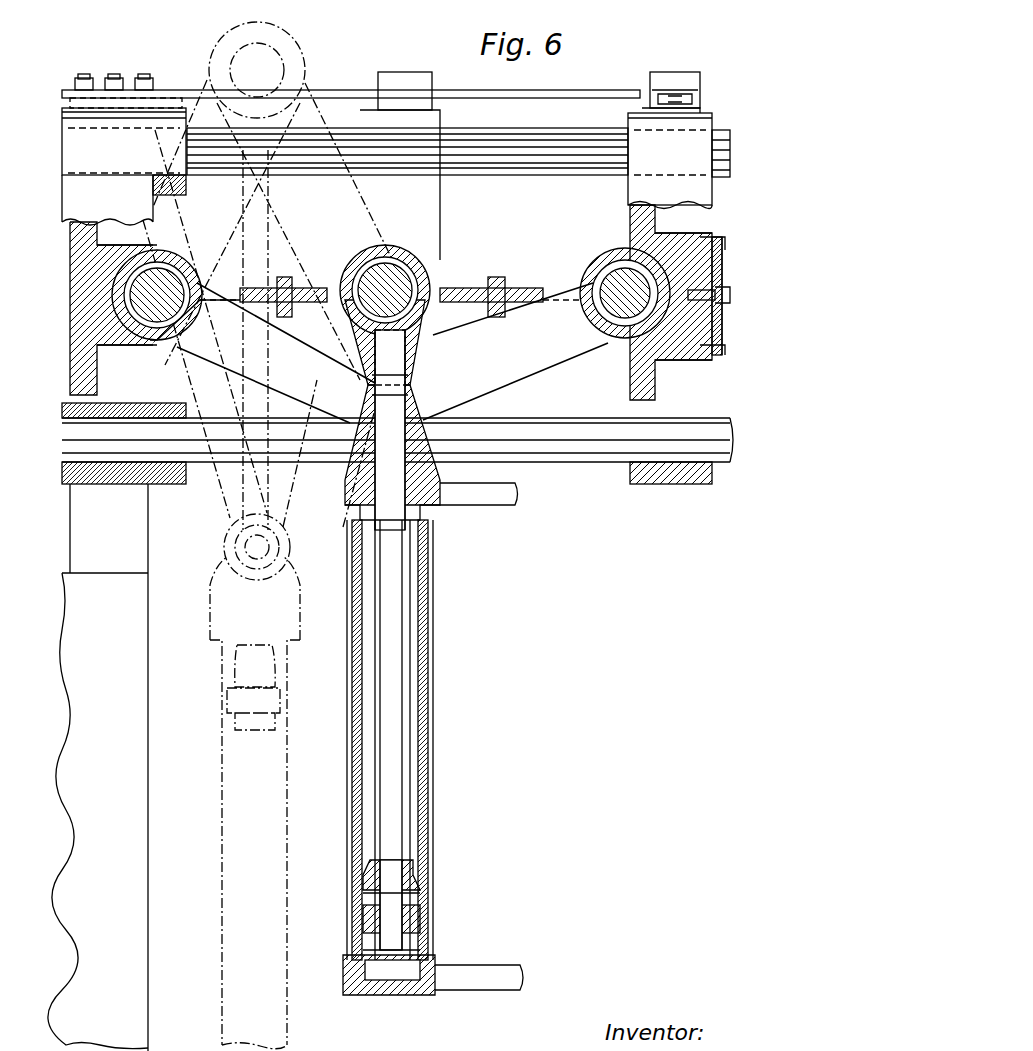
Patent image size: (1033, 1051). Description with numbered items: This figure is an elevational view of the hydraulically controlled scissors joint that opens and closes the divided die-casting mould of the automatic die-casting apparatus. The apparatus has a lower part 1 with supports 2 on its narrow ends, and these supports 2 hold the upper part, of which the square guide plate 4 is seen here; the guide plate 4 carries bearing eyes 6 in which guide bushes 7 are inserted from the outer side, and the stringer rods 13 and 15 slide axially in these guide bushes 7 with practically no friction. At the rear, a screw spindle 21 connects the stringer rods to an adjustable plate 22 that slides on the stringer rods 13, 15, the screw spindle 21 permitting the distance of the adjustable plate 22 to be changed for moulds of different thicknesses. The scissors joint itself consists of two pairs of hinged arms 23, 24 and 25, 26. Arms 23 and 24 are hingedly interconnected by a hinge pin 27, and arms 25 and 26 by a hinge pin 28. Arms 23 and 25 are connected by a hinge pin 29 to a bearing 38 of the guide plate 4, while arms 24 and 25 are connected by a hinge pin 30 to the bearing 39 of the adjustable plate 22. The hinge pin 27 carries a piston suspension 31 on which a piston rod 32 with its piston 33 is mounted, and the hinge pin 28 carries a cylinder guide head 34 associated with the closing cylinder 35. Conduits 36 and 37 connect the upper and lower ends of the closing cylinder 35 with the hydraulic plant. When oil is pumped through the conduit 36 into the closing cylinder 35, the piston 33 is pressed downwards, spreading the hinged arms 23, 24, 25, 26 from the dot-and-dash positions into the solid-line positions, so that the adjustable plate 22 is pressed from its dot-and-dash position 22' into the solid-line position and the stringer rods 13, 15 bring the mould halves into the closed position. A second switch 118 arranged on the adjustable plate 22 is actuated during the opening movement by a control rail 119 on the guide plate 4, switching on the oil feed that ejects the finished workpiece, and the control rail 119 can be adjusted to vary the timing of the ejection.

The lower part 1 is at (148, 750).
The support 2 is at (140, 537).
The square guide plate 4 is at (143, 218).
The bearing eye 6 is at (160, 115).
The guide bush 7 is at (150, 407).
The stringer rod 13 is at (566, 162).
The stringer rod 15 is at (600, 462).
The screw spindle 21 is at (718, 232).
The adjustable plate 22 is at (646, 162).
The adjustable plate position 22' is at (439, 161).
The hinged arm 23 is at (303, 252).
The hinged arm 24 is at (497, 267).
The hinged arm 25 is at (312, 395).
The hinged arm 26 is at (522, 372).
The hinge pin 27 is at (400, 262).
The hinge pin 28 is at (438, 492).
The hinge pin 29 is at (165, 272).
The hinge pin 30 is at (612, 268).
The piston suspension 31 is at (428, 257).
The piston rod 32 is at (392, 622).
The piston 33 is at (415, 915).
The cylinder guide head 34 is at (352, 498).
The closing cylinder 35 is at (422, 742).
The conduit 36 is at (508, 505).
The conduit 37 is at (493, 985).
The bearing 38 is at (193, 262).
The bearing 39 is at (612, 345).
The second switch 118 is at (675, 80).
The control rail 119 is at (578, 96).